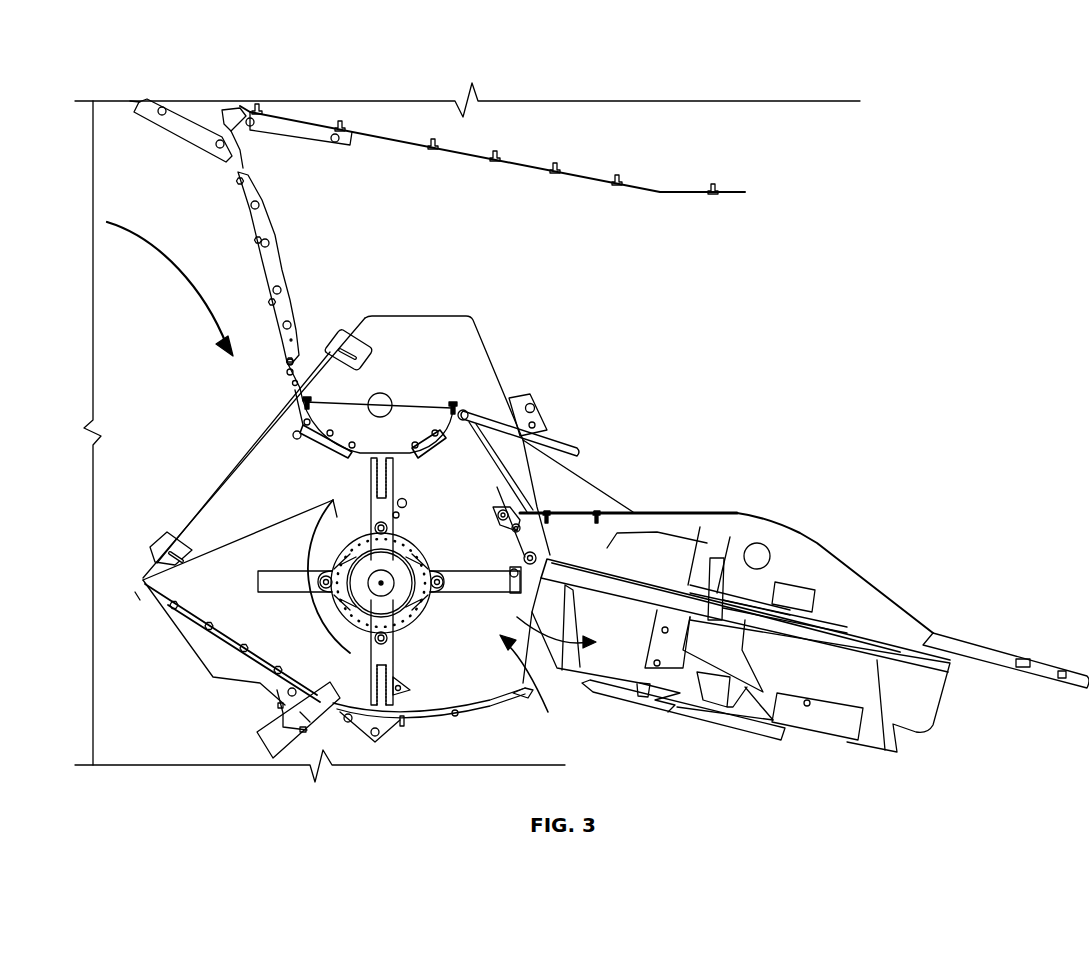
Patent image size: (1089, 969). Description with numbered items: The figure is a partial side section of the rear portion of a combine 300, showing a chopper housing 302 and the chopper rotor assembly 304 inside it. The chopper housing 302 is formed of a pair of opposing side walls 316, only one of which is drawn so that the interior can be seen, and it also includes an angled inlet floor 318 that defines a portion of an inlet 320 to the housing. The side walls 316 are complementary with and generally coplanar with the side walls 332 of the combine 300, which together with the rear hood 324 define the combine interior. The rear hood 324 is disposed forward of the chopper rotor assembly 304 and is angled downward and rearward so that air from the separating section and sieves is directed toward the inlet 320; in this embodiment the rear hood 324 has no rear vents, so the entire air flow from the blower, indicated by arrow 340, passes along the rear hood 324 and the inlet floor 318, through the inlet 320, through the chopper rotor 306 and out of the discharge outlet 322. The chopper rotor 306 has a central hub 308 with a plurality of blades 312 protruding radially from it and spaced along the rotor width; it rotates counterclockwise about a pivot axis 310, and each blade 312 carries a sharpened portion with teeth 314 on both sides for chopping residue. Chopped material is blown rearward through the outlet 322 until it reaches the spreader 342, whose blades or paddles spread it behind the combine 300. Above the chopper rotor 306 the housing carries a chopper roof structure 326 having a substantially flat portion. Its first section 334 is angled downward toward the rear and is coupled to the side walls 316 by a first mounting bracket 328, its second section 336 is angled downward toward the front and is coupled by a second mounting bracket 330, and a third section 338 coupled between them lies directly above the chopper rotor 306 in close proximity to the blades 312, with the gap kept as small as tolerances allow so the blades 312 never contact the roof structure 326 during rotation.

The combine 300 is at (920, 91).
The chopper housing 302 is at (437, 722).
The chopper rotor assembly 304 is at (535, 685).
The chopper rotor 306 is at (337, 612).
The central hub 308 is at (376, 608).
The pivot axis 310 is at (384, 584).
The blades 312 is at (267, 587).
The teeth 314 is at (404, 506).
The side walls 316 is at (483, 498).
The inlet floor 318 is at (348, 735).
The inlet 320 is at (211, 525).
The discharge outlet 322 is at (560, 630).
The rear hood 324 is at (188, 135).
The chopper roof structure 326 is at (398, 415).
The first mounting bracket 328 is at (315, 432).
The second mounting bracket 330 is at (428, 455).
The side walls 332 is at (691, 141).
The first section 334 is at (294, 384).
The second section 336 is at (440, 412).
The third section 338 is at (360, 452).
The arrow 340 is at (180, 272).
The spreader 342 is at (873, 765).